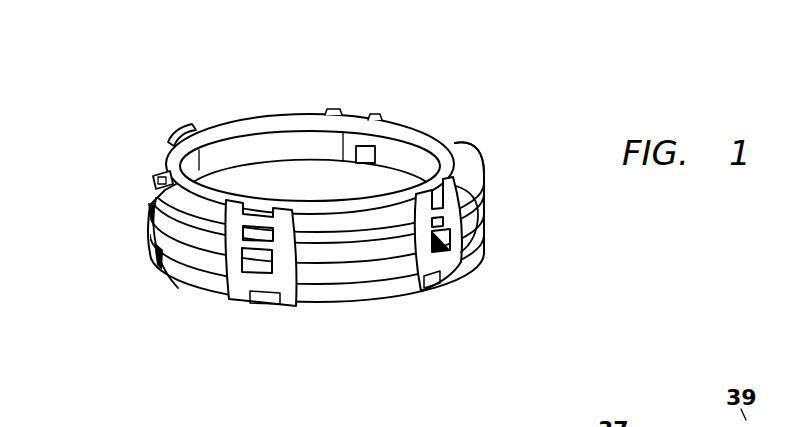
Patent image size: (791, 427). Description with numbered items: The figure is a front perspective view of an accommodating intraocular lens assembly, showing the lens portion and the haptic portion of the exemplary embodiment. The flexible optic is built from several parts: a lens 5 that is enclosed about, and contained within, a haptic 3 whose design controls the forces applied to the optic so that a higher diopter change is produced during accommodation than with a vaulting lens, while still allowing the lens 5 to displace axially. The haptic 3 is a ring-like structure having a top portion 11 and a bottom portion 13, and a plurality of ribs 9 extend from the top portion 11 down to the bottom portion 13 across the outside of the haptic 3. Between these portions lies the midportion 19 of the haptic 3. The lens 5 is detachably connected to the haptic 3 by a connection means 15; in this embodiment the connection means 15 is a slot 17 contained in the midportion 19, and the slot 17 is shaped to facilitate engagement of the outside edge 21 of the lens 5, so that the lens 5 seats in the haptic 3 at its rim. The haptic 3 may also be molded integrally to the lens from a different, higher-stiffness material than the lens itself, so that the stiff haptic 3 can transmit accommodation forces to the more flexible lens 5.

The haptic 3 is at (466, 152).
The lens 5 is at (337, 182).
The ribs 9 is at (157, 172).
The top portion 11 is at (257, 125).
The bottom portion 13 is at (363, 305).
The connection means 15 is at (172, 223).
The slot 17 is at (450, 243).
The midportion 19 is at (237, 260).
The outside edge 21 is at (468, 219).